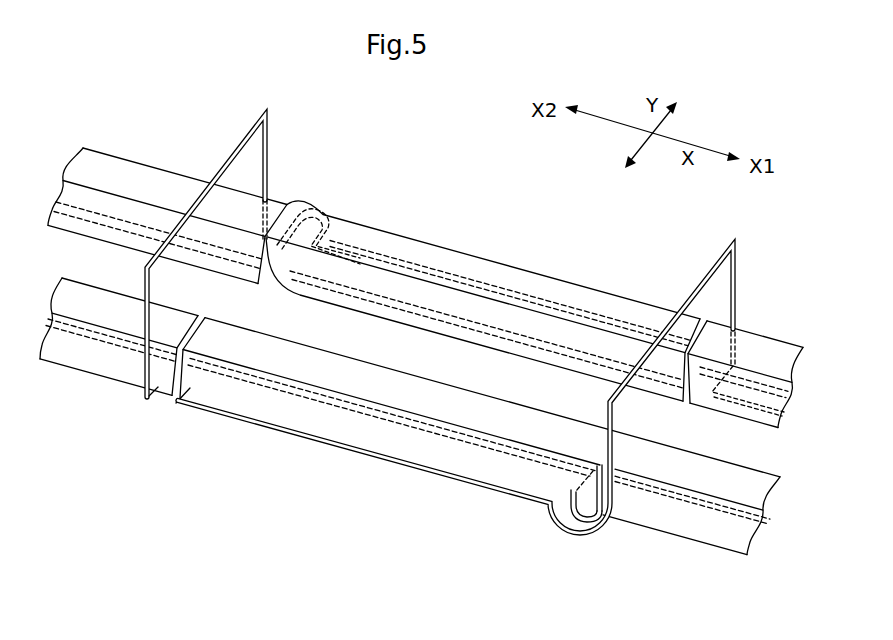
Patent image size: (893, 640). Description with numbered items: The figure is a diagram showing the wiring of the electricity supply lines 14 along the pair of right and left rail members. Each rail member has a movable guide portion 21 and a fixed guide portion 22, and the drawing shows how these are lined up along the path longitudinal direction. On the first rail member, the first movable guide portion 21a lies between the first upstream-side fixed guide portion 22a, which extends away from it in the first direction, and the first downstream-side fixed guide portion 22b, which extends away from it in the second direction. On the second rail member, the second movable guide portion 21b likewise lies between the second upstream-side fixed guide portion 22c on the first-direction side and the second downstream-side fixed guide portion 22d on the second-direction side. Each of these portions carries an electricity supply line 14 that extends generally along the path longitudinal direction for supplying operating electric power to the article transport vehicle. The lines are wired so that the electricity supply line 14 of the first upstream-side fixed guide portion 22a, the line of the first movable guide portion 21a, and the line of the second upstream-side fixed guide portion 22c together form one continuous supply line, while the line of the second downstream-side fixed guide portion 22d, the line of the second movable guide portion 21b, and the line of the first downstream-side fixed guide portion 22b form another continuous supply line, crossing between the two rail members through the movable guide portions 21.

The electricity supply line 14 is at (222, 167).
The movable guide portion 21 is at (438, 351).
The first movable guide portion 21a is at (312, 417).
The second movable guide portion 21b is at (430, 260).
The fixed guide portion 22 is at (421, 328).
The first upstream-side fixed guide portion 22a is at (668, 513).
The first downstream-side fixed guide portion 22b is at (87, 362).
The second upstream-side fixed guide portion 22c is at (762, 353).
The second downstream-side fixed guide portion 22d is at (110, 172).